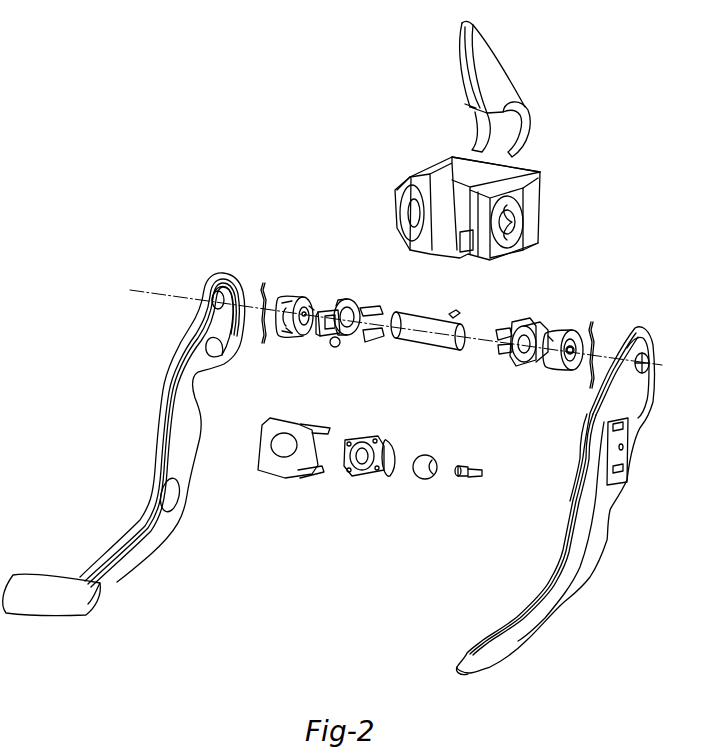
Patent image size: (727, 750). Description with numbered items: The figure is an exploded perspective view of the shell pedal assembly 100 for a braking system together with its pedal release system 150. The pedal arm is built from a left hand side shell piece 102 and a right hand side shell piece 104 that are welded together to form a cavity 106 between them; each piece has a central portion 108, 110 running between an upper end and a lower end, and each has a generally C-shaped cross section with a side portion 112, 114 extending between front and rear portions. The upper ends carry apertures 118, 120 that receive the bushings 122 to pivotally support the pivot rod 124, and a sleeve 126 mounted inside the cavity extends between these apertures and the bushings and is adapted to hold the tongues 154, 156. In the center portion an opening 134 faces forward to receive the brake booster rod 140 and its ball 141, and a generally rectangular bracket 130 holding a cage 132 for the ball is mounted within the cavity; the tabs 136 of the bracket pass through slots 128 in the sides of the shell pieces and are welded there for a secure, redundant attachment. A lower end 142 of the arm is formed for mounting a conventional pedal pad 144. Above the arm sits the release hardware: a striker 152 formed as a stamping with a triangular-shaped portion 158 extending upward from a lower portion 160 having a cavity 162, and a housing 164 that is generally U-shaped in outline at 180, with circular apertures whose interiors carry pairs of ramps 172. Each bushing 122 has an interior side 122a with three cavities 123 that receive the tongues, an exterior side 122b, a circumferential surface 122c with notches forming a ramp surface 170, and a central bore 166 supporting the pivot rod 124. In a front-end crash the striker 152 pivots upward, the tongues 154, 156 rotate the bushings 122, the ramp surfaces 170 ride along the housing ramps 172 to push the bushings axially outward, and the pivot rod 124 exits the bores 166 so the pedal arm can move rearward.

The shell pedal assembly 100 is at (238, 200).
The left hand side shell piece 102 is at (137, 543).
The right hand side shell piece 104 is at (573, 572).
The cavity 106 is at (185, 439).
The central portion 108 is at (166, 489).
The central portion 110 is at (564, 556).
The side portion 112 is at (167, 391).
The side portion 114 is at (585, 455).
The aperture 118 is at (216, 298).
The aperture 120 is at (643, 342).
The bushing 122 is at (294, 296).
The interior side 122a is at (313, 308).
The exterior side 122b is at (562, 368).
The circumferential surface 122c is at (292, 330).
The cavities 123 is at (314, 340).
The pivot rod 124 is at (428, 330).
The sleeve 126 is at (352, 306).
The slots 128 is at (626, 470).
The bracket 130 is at (298, 440).
The cage 132 is at (360, 440).
The opening 134 is at (202, 388).
The tabs 136 is at (390, 444).
The brake booster rod 140 is at (476, 466).
The ball 141 is at (424, 476).
The lower end 142 is at (91, 600).
The pedal pad 144 is at (50, 608).
The pedal release system 150 is at (575, 160).
The striker 152 is at (486, 74).
The tongue 154 is at (505, 374).
The tongue 156 is at (524, 326).
The triangular-shaped portion 158 is at (476, 44).
The lower portion 160 is at (532, 124).
The cavity 162 is at (494, 121).
The housing 164 is at (537, 231).
The central bore 166 is at (335, 305).
The ramp surface 170 is at (263, 290).
The ramp 172 is at (518, 222).
The U-shaped outline 180 is at (436, 170).